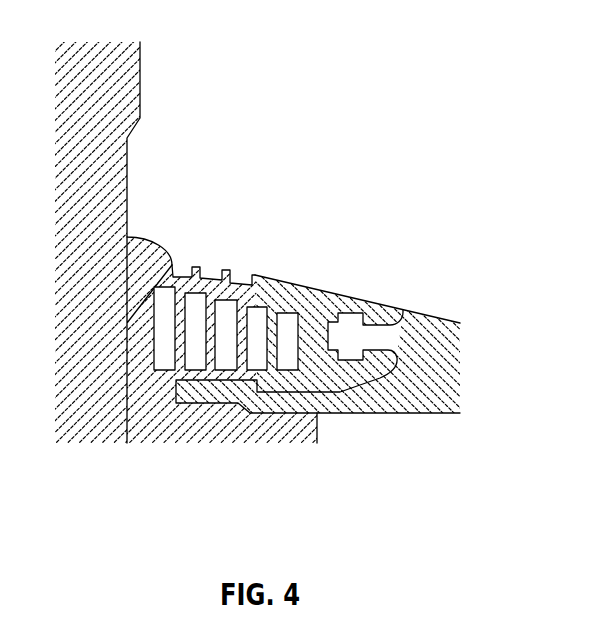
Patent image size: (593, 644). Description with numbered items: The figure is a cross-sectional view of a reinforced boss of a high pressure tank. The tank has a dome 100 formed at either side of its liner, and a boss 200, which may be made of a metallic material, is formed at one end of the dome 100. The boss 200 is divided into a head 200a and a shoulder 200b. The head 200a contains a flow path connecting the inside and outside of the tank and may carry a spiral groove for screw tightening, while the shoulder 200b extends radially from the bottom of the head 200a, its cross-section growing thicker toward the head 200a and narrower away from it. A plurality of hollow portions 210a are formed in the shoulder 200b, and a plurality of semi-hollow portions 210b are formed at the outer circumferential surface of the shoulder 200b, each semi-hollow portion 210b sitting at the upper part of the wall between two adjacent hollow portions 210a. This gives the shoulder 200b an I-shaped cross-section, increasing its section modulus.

The dome 100 is at (375, 255).
The boss 200 is at (133, 234).
The head 200a is at (127, 165).
The shoulder 200b is at (188, 445).
The hollow portion 210a is at (259, 322).
The semi-hollow portion 210b is at (242, 279).